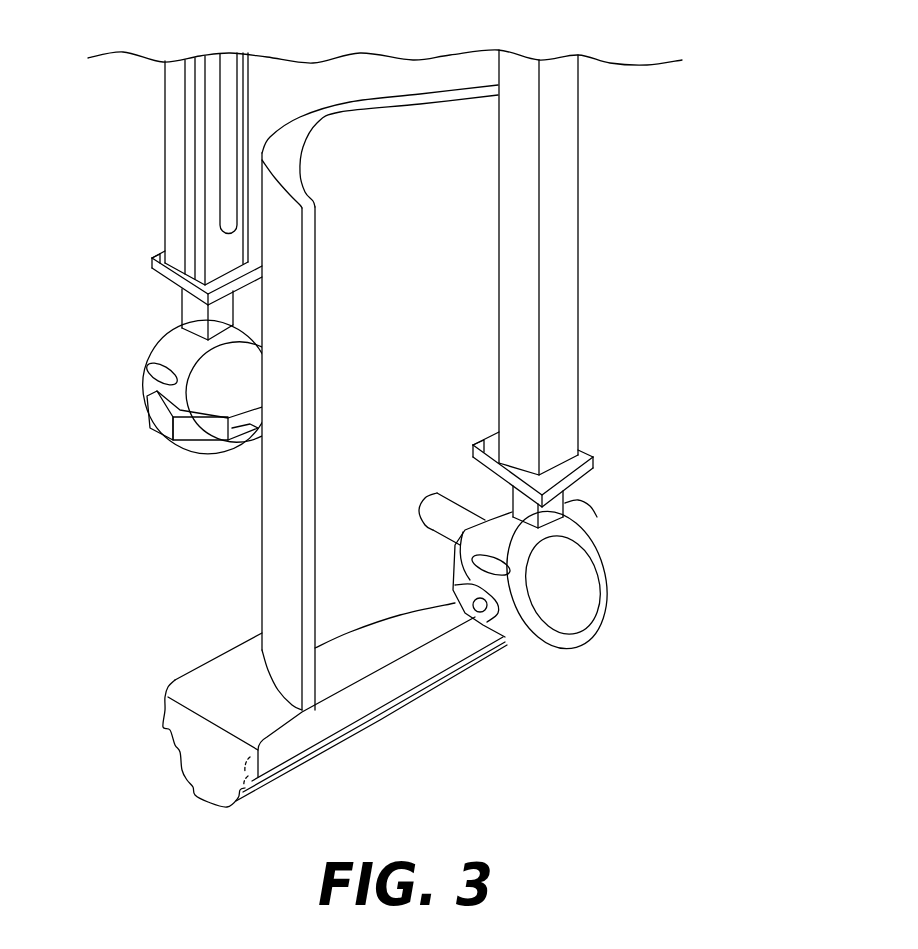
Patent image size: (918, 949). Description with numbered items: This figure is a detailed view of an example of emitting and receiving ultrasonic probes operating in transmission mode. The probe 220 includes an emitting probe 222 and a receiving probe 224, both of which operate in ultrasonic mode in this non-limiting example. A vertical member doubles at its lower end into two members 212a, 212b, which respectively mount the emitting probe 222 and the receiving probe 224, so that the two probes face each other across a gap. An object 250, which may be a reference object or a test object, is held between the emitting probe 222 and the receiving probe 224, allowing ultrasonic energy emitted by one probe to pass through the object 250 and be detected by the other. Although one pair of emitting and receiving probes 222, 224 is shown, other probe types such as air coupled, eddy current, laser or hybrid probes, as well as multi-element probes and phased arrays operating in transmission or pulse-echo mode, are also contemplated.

The probe 220 is at (640, 118).
The member 212a is at (578, 327).
The member 212b is at (165, 185).
The emitting probe 222 is at (605, 565).
The receiving probe 224 is at (142, 390).
The object 250 is at (240, 573).